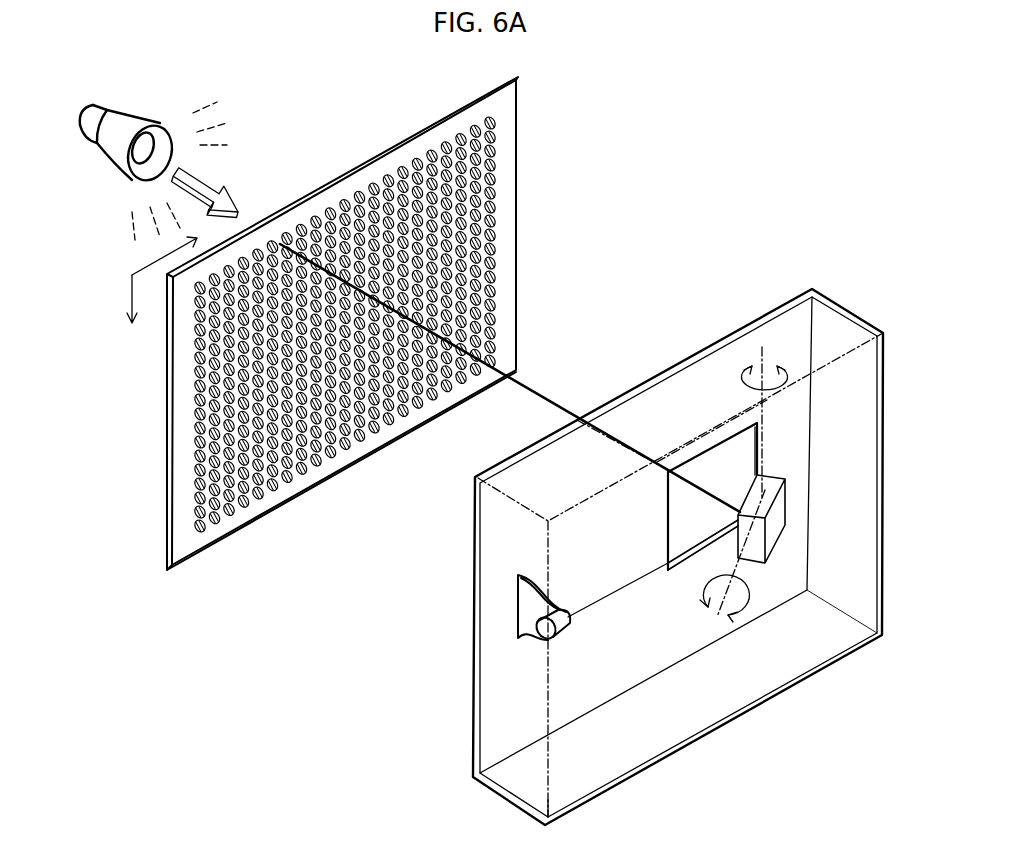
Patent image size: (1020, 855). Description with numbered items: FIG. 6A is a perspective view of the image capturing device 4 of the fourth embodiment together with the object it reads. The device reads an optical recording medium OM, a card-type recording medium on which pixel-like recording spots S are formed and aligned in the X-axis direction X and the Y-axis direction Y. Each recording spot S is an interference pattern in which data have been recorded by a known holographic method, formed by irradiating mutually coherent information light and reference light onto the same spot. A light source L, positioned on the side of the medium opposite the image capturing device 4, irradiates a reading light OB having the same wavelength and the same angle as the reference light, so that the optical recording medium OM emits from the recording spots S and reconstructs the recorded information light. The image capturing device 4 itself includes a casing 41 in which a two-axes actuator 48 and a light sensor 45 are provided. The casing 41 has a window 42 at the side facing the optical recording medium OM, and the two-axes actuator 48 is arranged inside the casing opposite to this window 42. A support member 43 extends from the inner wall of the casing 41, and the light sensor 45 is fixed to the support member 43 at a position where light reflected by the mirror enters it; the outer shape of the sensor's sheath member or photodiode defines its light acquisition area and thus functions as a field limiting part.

The image capturing device 4 is at (648, 526).
The casing 41 is at (825, 292).
The window 42 is at (706, 452).
The support member 43 is at (521, 610).
The light sensor 45 is at (547, 634).
The two-axes actuator 48 is at (773, 530).
The light source L is at (75, 120).
The reading light OB is at (210, 170).
The recording spots S is at (431, 156).
The optical recording medium OM is at (522, 124).
The X-axis direction X is at (174, 247).
The Y-axis direction Y is at (129, 315).